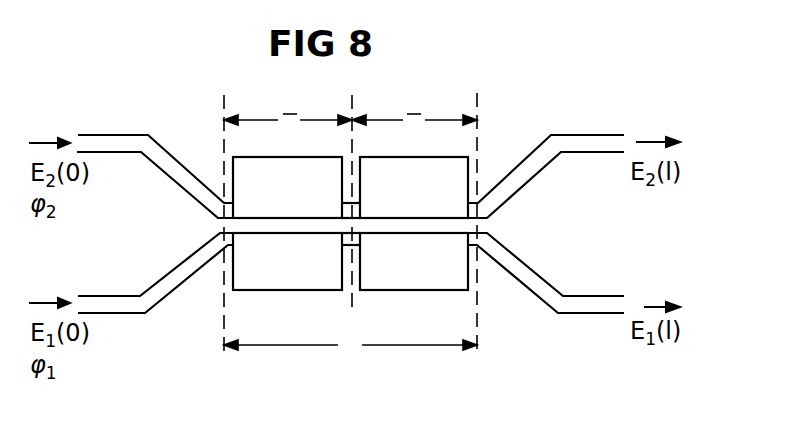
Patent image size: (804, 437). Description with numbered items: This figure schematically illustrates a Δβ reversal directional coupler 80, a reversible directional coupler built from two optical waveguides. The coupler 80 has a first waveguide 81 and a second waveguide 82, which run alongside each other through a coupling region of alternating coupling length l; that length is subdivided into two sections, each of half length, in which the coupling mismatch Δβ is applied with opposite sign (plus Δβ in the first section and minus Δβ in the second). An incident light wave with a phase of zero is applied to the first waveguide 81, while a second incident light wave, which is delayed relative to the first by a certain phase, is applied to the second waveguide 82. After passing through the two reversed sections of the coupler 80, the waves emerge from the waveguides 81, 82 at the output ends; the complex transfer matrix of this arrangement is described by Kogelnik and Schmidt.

The Δβ reversal directional coupler 80 is at (450, 95).
The waveguide 81 is at (136, 295).
The waveguide 82 is at (135, 136).